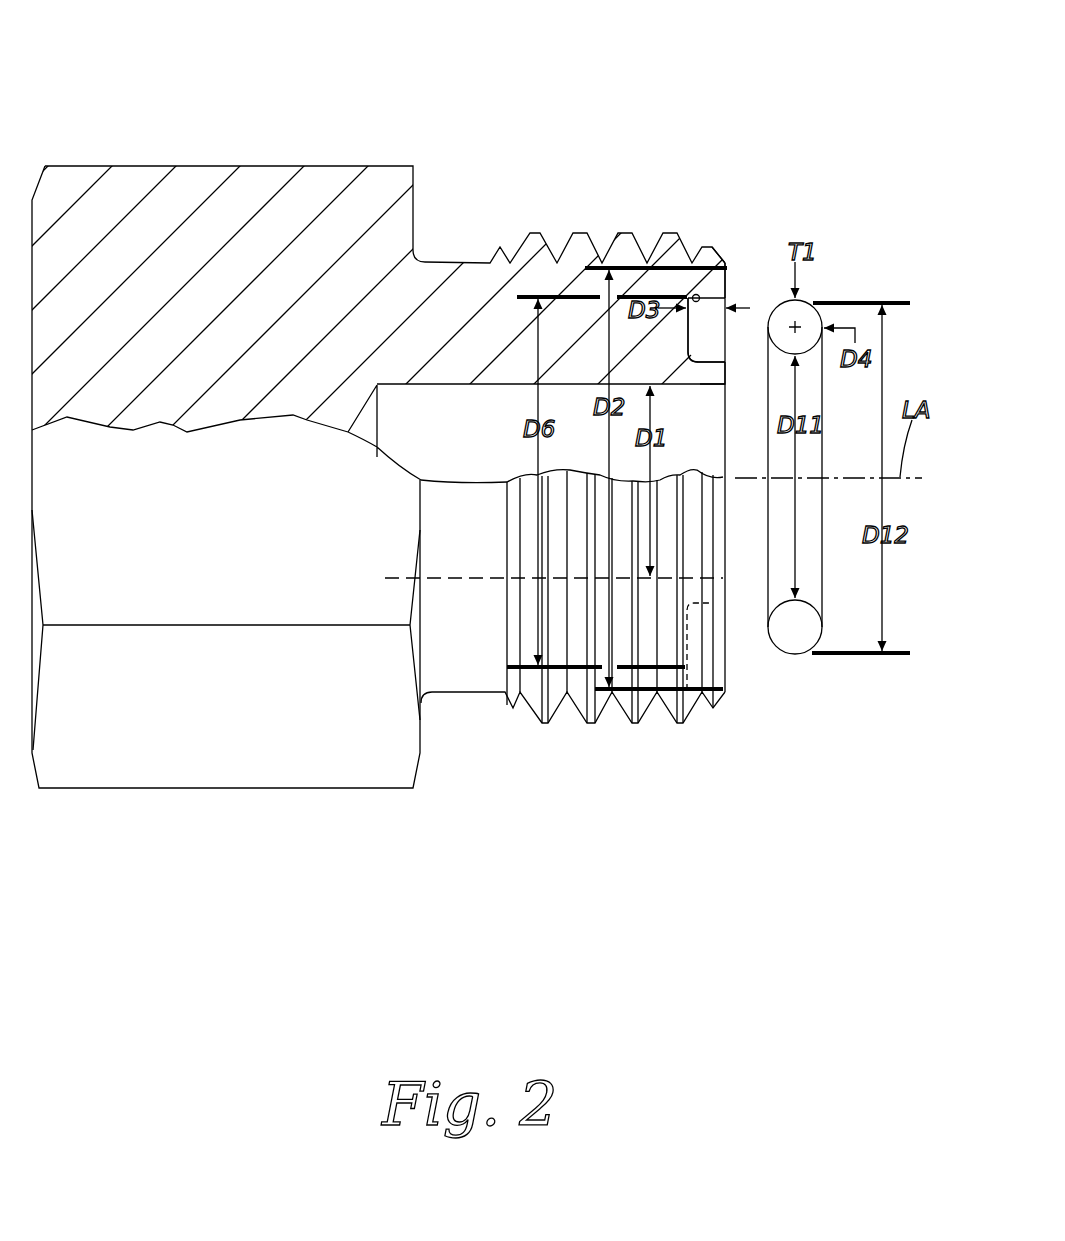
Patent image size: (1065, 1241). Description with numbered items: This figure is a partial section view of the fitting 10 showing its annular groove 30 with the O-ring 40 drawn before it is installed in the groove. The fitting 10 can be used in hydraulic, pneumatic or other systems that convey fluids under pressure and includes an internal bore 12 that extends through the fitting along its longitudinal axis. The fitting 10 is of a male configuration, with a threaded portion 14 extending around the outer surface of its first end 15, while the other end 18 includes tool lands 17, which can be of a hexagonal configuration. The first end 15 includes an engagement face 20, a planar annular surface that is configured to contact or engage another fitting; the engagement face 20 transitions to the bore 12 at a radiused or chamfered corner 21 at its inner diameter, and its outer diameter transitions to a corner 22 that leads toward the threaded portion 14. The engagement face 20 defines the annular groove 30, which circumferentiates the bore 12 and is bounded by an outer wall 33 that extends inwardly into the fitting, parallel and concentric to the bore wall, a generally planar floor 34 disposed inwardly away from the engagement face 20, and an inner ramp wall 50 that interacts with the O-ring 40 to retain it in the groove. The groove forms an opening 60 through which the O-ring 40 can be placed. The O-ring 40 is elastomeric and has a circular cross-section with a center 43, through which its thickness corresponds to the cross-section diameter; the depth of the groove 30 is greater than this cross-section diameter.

The fitting 10 is at (363, 95).
The internal bore 12 is at (583, 452).
The threaded portion 14 is at (592, 210).
The first end 15 is at (707, 130).
The tool lands 17 is at (240, 165).
The inlet end 18 is at (57, 118).
The engagement face 20 is at (727, 268).
The corner 21 is at (726, 388).
The corner 22 is at (726, 268).
The annular groove 30 is at (750, 310).
The outer wall 33 is at (693, 294).
The floor 34 is at (689, 342).
The O-ring 40 is at (826, 265).
The center 43 is at (797, 330).
The inner ramp wall 50 is at (712, 350).
The opening 60 is at (716, 332).